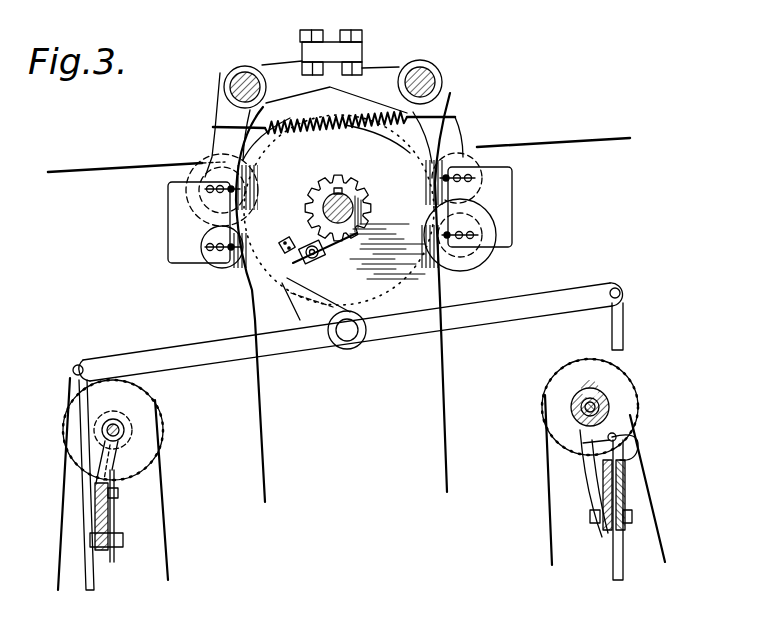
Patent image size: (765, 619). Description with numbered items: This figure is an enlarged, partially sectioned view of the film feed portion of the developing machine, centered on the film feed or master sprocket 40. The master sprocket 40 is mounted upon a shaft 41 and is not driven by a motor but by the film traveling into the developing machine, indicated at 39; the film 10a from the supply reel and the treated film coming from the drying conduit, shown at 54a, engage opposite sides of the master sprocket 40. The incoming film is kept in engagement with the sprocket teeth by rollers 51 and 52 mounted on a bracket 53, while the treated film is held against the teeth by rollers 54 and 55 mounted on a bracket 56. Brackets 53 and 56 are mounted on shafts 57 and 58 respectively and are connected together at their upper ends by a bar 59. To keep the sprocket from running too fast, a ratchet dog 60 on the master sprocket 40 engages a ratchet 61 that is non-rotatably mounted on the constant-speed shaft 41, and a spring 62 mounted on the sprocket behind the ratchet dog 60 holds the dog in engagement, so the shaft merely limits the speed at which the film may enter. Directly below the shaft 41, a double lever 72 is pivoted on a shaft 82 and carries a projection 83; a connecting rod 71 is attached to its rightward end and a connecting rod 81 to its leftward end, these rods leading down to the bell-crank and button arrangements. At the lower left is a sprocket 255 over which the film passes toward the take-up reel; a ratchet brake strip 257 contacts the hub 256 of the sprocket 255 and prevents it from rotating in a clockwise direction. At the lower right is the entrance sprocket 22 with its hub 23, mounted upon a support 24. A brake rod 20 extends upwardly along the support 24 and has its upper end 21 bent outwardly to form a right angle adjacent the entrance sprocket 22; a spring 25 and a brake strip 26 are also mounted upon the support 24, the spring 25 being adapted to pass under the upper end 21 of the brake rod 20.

The bar 59 is at (343, 48).
The shaft 58 is at (232, 82).
The shaft 57 is at (432, 74).
The roller 54 is at (198, 158).
The film from the conduit 54a is at (96, 160).
The film traveling into the developing machine 39 is at (583, 146).
The roller 51 is at (473, 161).
The bracket 53 is at (498, 213).
The roller 52 is at (481, 253).
The master sprocket 40 is at (437, 289).
The shaft 41 is at (346, 200).
The ratchet 61 is at (361, 212).
The spring 62 is at (290, 240).
The ratchet dog 60 is at (316, 259).
The projection 83 is at (306, 296).
The bracket 56 is at (185, 250).
The roller 55 is at (226, 266).
The double lever 72 is at (575, 292).
The connecting rod 71 is at (625, 326).
The shaft 82 is at (350, 335).
The sprocket 255 is at (135, 405).
The hub 256 is at (131, 425).
The ratchet brake strip 257 is at (131, 453).
The connecting rod 81 is at (93, 573).
The hub 23 is at (606, 400).
The entrance sprocket 22 is at (626, 405).
The upper end of brake rod 21 is at (616, 437).
The spring 25 is at (639, 448).
The support 24 is at (630, 489).
The brake strip 26 is at (595, 456).
The film 10a is at (668, 542).
The brake rod 20 is at (625, 568).